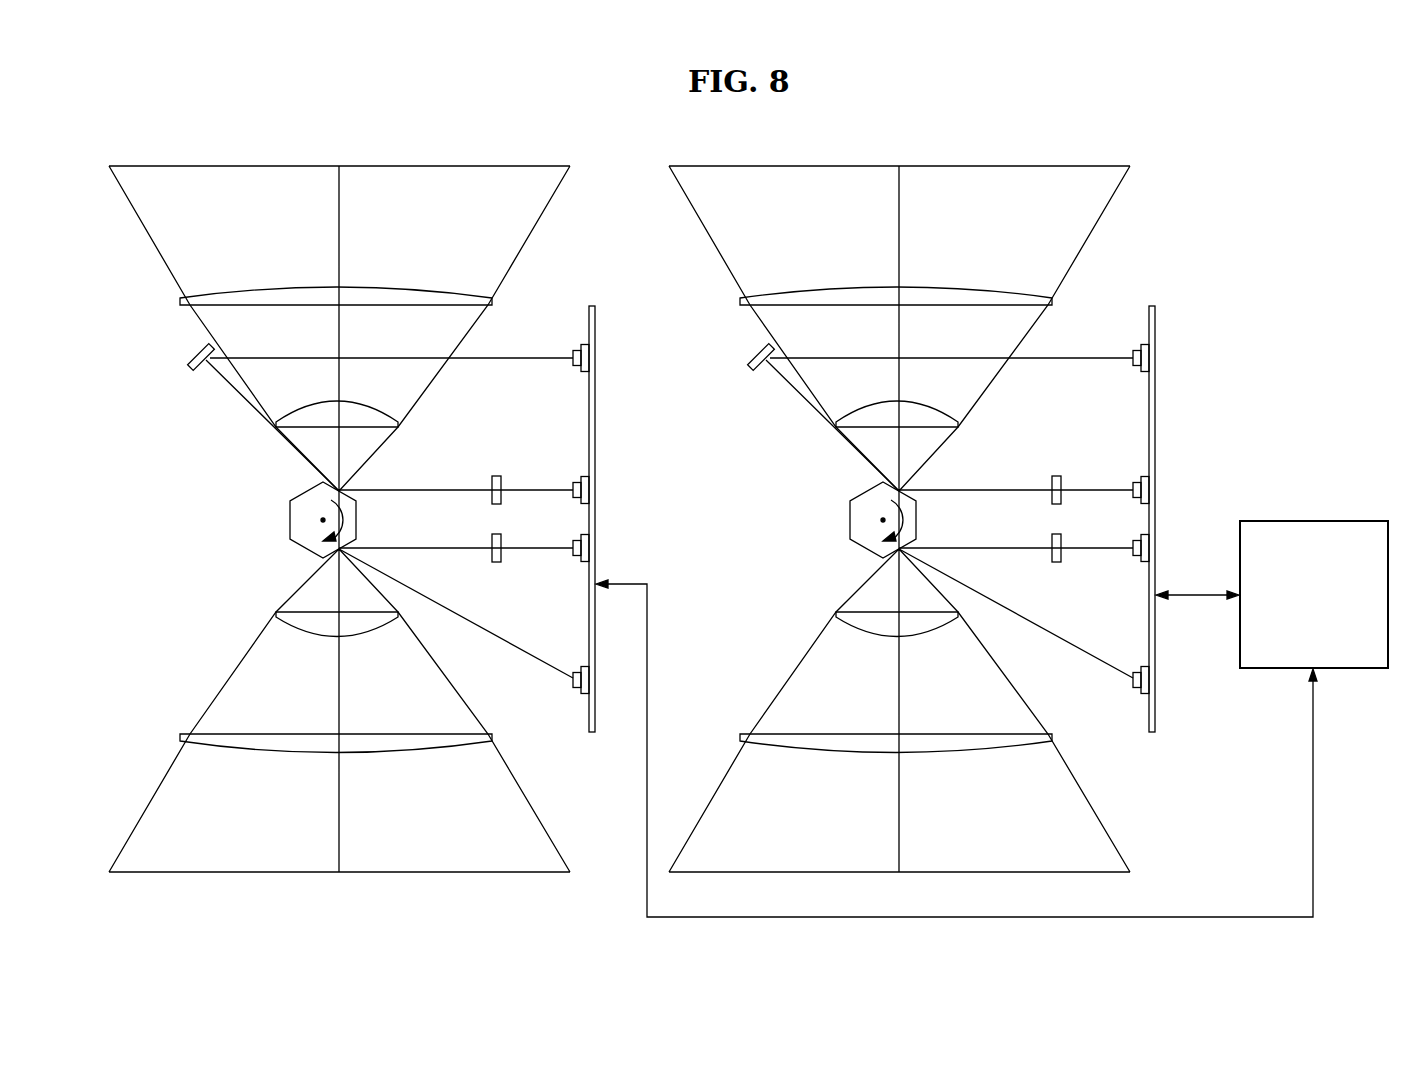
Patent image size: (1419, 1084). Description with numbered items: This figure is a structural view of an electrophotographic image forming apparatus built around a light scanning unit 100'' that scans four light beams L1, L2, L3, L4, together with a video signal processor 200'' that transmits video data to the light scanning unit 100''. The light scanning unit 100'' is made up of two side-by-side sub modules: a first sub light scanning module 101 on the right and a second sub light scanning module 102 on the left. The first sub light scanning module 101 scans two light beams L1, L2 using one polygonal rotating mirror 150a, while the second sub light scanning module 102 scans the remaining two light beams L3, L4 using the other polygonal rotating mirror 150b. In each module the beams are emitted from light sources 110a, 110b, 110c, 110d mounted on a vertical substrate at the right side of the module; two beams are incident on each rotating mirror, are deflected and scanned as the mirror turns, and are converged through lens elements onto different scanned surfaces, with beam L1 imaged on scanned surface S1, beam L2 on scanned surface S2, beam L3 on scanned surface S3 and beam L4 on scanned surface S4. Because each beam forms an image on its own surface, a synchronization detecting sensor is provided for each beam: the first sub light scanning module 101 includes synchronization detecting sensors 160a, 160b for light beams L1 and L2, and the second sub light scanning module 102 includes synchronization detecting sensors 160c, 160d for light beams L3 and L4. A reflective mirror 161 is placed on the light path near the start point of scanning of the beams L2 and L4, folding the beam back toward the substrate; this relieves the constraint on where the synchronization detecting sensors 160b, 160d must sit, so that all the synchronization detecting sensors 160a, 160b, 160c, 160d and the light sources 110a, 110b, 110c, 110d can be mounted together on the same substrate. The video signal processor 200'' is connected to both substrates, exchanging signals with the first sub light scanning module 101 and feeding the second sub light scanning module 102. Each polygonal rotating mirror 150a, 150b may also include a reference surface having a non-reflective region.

The light scanning unit 100'' is at (748, 501).
The first sub light scanning module 101 is at (1098, 153).
The second sub light scanning module 102 is at (545, 152).
The light source 110a is at (1131, 561).
The light source 110b is at (1133, 483).
The light source 110c is at (571, 561).
The light source 110d is at (573, 483).
The polygonal rotating mirror 150a is at (866, 489).
The polygonal rotating mirror 150b is at (306, 489).
The synchronization detecting sensor 160a is at (1131, 695).
The synchronization detecting sensor 160b is at (1132, 345).
The synchronization detecting sensor 160c is at (571, 695).
The synchronization detecting sensor 160d is at (572, 345).
The reflective mirror 161 is at (190, 366).
The video signal processor 200'' is at (992, 683).
The light beam L1 is at (794, 672).
The light beam L2 is at (715, 247).
The light beam L3 is at (234, 672).
The light beam L4 is at (155, 247).
The scanned surface S1 is at (1028, 871).
The scanned surface S2 is at (962, 165).
The scanned surface S3 is at (237, 874).
The scanned surface S4 is at (237, 165).